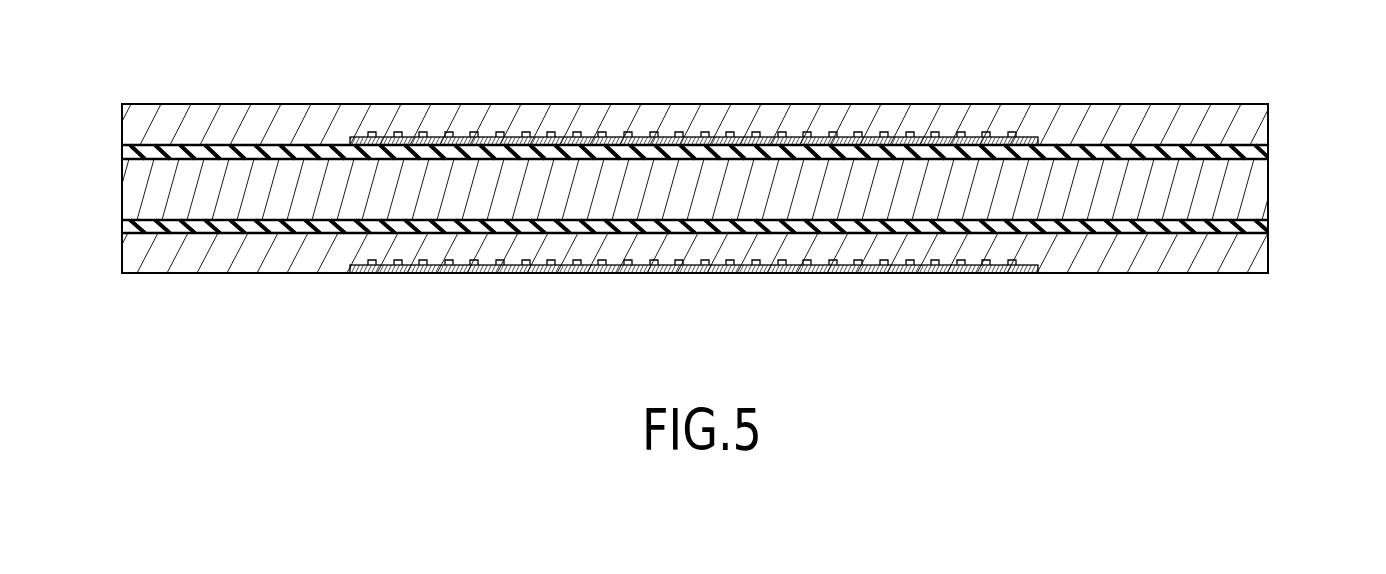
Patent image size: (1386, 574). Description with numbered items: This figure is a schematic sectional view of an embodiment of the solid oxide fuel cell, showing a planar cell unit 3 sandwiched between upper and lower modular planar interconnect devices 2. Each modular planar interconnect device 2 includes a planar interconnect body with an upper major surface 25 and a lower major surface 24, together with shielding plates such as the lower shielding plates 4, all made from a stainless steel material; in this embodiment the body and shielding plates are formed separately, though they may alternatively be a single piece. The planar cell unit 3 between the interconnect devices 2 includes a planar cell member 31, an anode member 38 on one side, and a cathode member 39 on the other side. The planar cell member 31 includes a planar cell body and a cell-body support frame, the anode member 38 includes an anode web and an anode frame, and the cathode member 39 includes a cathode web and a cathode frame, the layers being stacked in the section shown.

The modular planar interconnect device 2 is at (1281, 124).
The planar cell unit 3 is at (742, 184).
The lower shielding plate 4 is at (383, 137).
The lower major surface 24 is at (1110, 273).
The upper major surface 25 is at (1168, 220).
The planar cell member 31 is at (1268, 191).
The anode member 38 is at (1268, 153).
The cathode member 39 is at (730, 221).